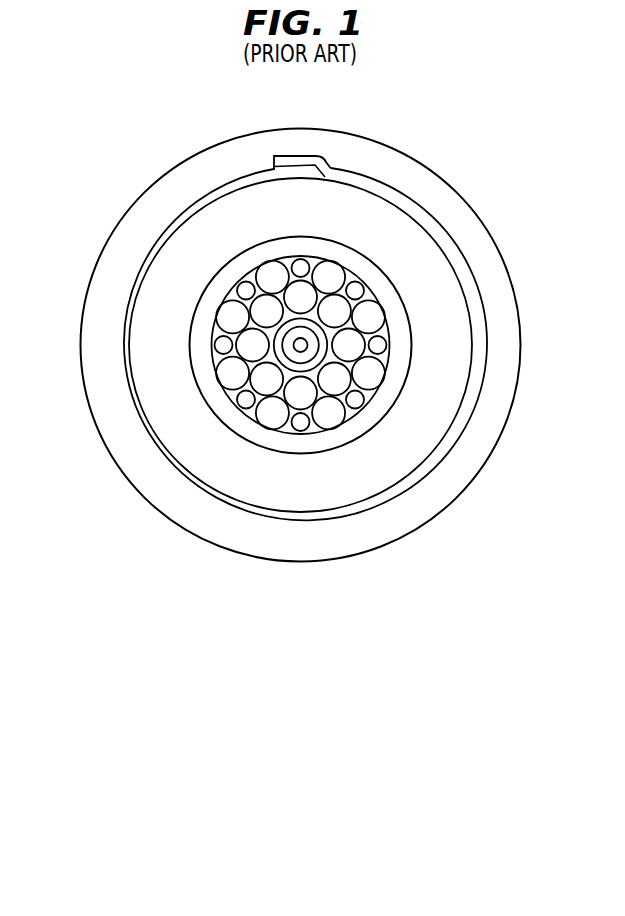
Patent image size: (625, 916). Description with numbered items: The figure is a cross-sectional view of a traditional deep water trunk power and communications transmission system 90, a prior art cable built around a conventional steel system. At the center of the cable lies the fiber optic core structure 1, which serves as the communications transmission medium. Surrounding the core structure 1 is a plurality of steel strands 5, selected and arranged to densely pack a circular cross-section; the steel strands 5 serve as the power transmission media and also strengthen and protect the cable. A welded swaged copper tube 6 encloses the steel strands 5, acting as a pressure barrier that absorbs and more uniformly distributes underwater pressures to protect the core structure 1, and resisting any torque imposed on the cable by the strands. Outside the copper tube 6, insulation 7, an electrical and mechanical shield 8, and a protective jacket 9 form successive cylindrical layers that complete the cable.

The fiber optic core structure 1 is at (352, 351).
The steel strands 5 is at (335, 312).
The welded swaged copper tube 6 is at (190, 345).
The insulation 7 is at (215, 233).
The electrical and mechanical shield 8 is at (409, 203).
The protective jacket 9 is at (104, 444).
The deep water trunk power and communications transmission system 90 is at (493, 178).